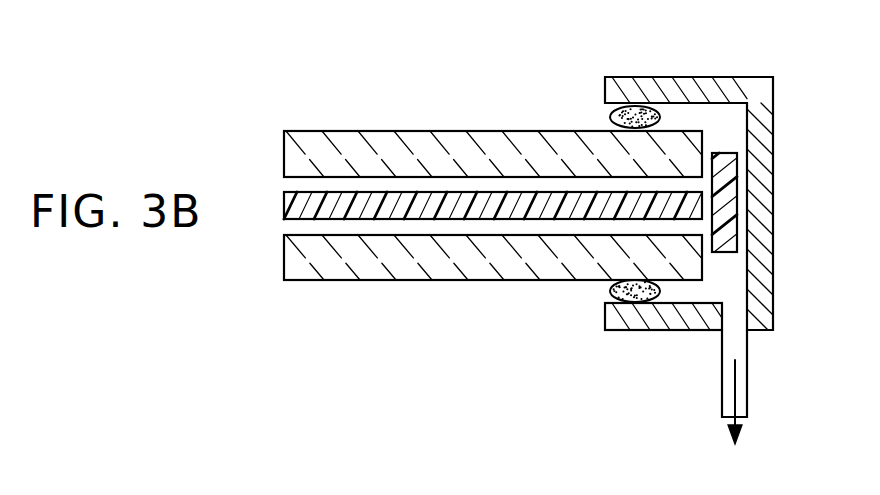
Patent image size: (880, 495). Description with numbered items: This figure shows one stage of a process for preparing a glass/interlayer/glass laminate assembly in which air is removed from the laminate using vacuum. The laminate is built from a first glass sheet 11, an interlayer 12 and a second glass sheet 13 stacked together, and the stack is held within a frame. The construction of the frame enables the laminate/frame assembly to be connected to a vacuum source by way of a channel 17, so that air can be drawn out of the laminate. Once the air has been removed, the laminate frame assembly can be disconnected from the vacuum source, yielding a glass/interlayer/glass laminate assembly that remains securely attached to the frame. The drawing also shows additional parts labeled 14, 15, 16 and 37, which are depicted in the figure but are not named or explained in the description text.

The glass 11 is at (284, 154).
The interlayer 12 is at (284, 206).
The glass 13 is at (284, 257).
The spacer block 14 is at (723, 153).
The clamp bracket 15 is at (774, 191).
The seal 16 is at (610, 118).
The channel 17 is at (750, 380).
The clamp arm 37 is at (643, 76).